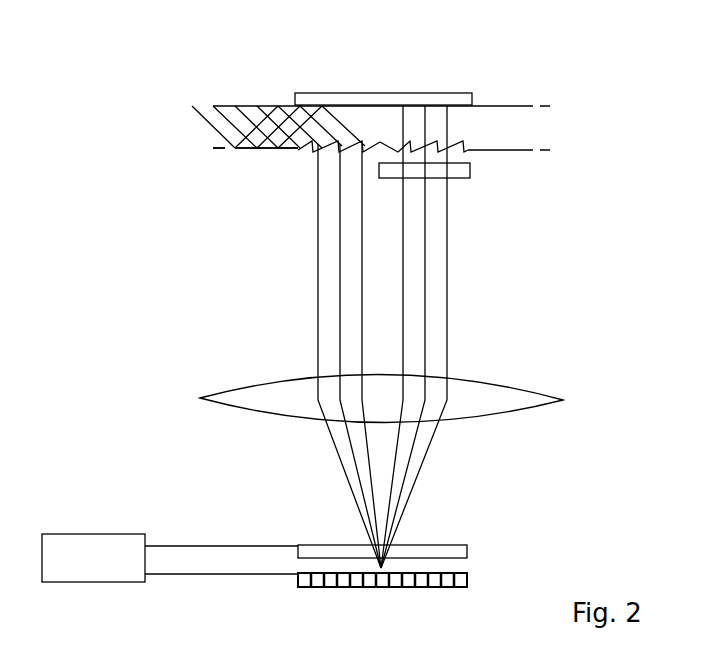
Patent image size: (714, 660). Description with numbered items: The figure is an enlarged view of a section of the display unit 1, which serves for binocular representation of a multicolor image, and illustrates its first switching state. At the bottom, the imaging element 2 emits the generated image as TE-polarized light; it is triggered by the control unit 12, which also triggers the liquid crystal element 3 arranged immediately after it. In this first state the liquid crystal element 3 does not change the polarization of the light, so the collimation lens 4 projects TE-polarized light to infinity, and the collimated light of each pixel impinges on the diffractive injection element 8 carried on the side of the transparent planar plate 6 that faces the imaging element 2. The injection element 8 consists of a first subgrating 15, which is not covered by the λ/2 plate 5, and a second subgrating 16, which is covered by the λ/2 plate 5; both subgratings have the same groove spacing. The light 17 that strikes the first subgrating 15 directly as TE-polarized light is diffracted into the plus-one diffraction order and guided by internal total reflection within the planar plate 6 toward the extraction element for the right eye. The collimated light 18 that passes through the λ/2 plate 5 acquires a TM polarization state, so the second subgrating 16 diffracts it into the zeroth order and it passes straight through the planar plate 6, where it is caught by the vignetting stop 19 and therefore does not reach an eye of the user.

The display unit 1 is at (261, 72).
The imaging element 2 is at (467, 584).
The liquid crystal element 3 is at (467, 552).
The collimation lens 4 is at (563, 400).
The λ/2 plate 5 is at (475, 178).
The transparent planar plate 6 is at (500, 105).
The diffractive injection element 8 is at (298, 171).
The control unit 12 is at (92, 534).
The first subgrating 15 is at (298, 152).
The second subgrating 16 is at (468, 157).
The light 17 is at (318, 218).
The collimated light 18 is at (447, 218).
The vignetting stop 19 is at (357, 93).